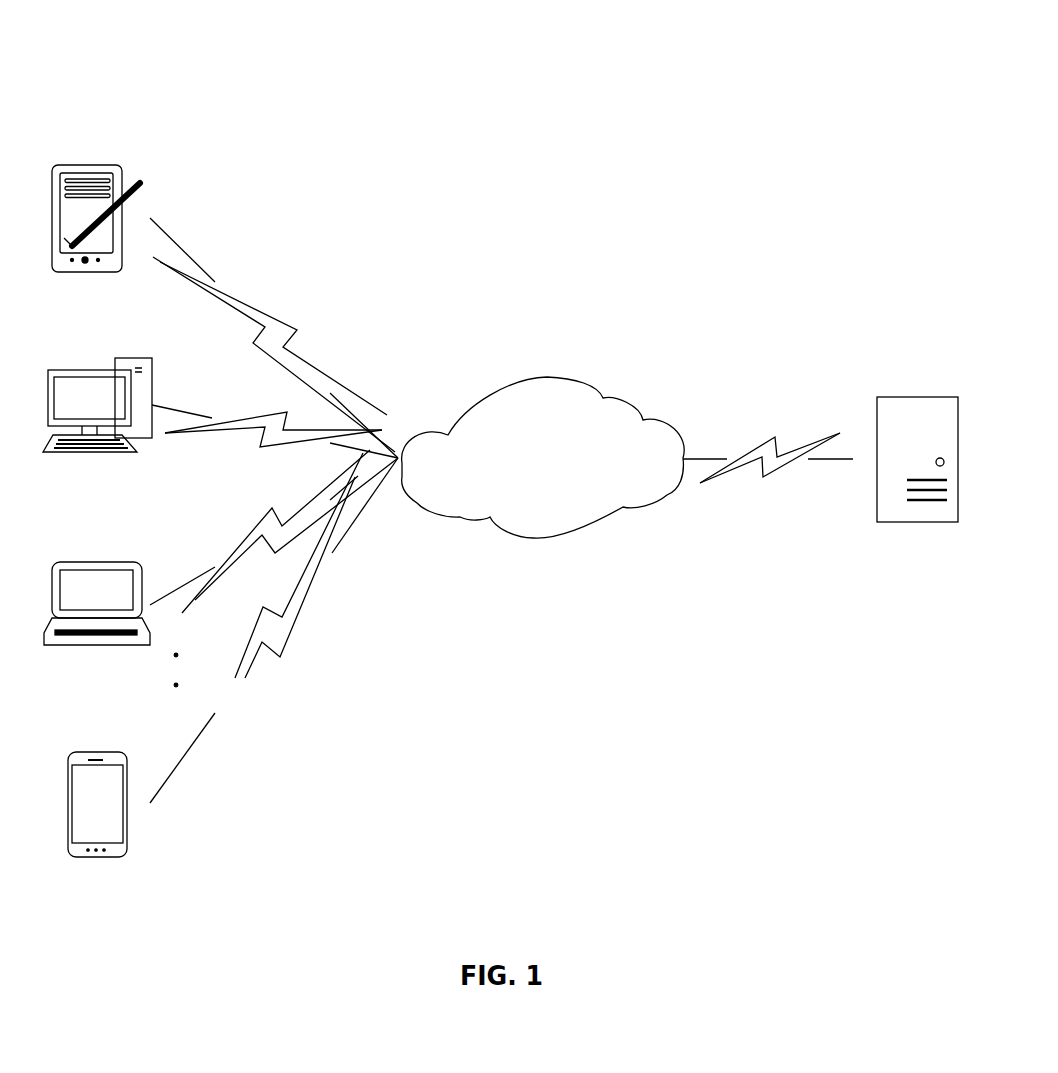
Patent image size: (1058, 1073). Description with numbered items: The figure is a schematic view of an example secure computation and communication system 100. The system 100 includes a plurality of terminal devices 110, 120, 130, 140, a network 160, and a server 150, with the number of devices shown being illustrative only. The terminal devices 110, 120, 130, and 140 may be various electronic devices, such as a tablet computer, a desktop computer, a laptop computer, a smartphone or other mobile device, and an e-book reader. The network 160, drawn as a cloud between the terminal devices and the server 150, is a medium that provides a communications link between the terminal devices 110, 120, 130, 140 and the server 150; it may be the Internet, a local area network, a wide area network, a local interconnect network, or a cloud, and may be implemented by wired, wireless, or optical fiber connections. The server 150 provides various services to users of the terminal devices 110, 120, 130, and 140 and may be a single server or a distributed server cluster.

The secure computation and communication system 100 is at (570, 134).
The terminal device 110 is at (120, 167).
The terminal device 120 is at (80, 368).
The terminal device 130 is at (90, 560).
The terminal device 140 is at (92, 750).
The server 150 is at (925, 395).
The network 160 is at (563, 373).